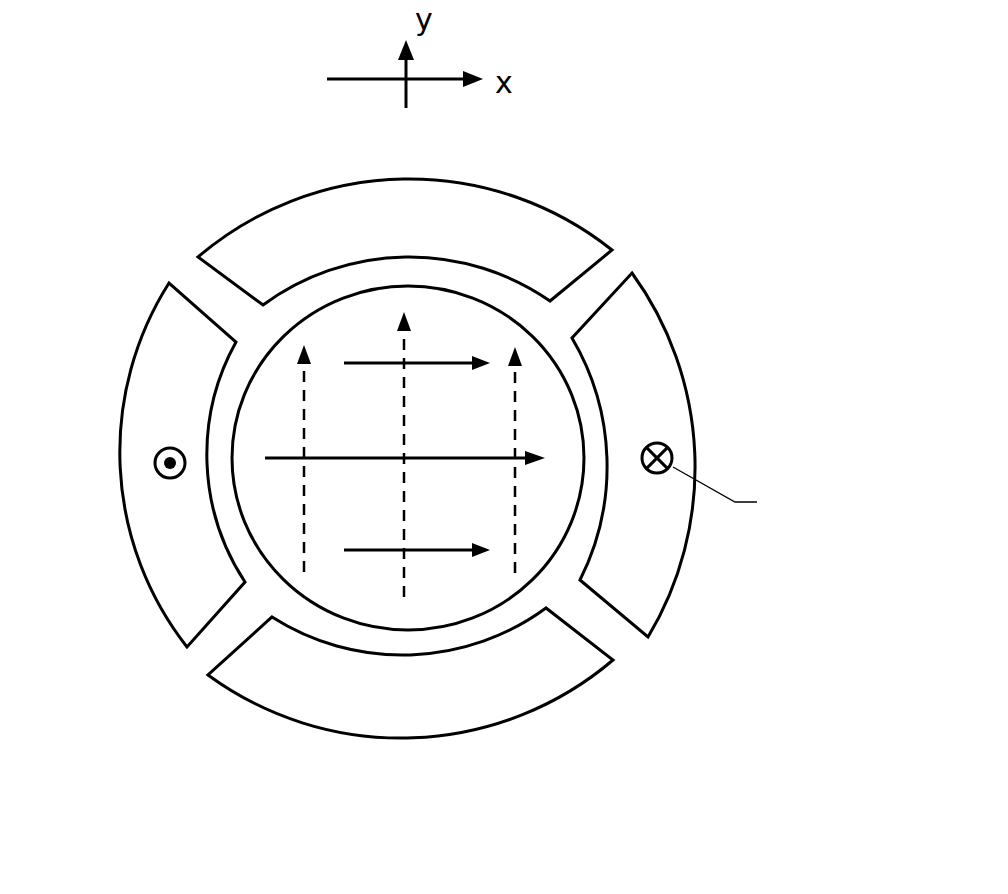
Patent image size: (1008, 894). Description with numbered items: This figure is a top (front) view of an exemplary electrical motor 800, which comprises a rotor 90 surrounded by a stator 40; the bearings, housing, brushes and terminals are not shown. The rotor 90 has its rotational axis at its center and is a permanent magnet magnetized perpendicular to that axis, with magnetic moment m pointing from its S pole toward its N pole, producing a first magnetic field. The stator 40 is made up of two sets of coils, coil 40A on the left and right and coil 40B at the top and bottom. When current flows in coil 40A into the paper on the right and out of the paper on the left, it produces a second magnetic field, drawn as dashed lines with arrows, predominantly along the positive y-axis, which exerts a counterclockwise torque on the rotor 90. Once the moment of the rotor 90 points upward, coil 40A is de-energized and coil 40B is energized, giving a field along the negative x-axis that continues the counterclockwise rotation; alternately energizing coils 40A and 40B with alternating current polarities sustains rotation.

The top view of magnetic device 800 is at (462, 471).
The stator 40 is at (430, 464).
The coil 40A is at (430, 460).
The coil 40B is at (415, 464).
The rotor 90 is at (514, 458).